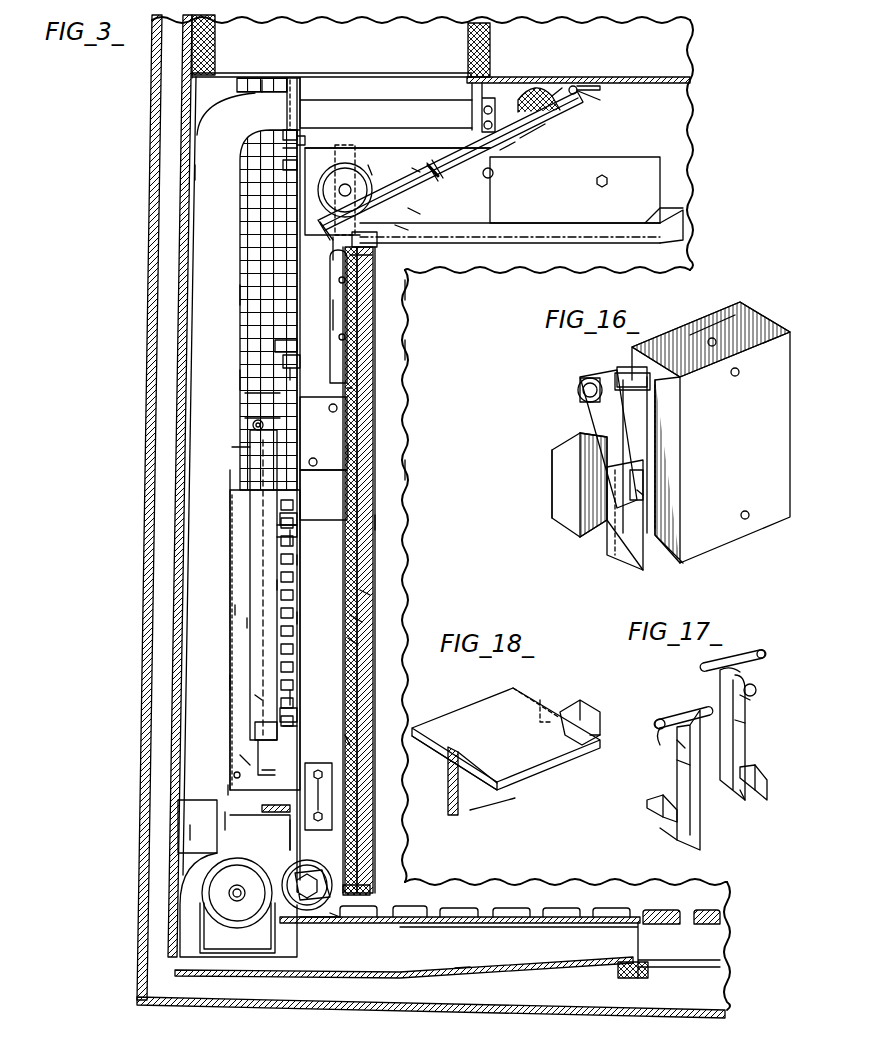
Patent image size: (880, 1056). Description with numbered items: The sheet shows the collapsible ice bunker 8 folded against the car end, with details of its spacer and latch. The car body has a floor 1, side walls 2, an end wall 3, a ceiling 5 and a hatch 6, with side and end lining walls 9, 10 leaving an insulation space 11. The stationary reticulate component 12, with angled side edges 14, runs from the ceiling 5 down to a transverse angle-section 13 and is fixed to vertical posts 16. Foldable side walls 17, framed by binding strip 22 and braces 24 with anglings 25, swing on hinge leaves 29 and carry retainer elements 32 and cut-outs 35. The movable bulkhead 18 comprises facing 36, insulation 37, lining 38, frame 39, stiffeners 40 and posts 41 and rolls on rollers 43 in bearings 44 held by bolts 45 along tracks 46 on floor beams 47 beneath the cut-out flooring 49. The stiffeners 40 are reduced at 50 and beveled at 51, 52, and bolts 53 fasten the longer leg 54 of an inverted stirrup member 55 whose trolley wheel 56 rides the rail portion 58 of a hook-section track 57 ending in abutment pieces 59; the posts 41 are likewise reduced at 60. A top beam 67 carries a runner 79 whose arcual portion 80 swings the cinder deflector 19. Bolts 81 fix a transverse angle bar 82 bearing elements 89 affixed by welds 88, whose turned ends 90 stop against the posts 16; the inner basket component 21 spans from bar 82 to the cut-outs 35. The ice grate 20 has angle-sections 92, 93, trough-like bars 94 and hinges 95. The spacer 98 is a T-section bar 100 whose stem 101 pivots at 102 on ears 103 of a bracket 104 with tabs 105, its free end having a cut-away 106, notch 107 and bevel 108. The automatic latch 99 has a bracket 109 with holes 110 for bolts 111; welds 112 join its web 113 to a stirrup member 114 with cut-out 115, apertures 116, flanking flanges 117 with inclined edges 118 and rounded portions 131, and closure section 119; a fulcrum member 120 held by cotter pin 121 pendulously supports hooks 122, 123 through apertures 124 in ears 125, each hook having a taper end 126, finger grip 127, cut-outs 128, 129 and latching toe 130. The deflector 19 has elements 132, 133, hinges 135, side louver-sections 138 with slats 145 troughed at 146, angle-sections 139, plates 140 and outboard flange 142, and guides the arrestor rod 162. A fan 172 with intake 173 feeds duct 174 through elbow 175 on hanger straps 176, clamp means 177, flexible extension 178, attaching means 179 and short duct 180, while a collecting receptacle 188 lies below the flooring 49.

In FIG. 3, the floor 1 is at (421, 1014).
In FIG. 3, the side walls 2 is at (408, 470).
In FIG. 3, the end wall 3 is at (150, 432).
In FIG. 3, the inner roof or ceiling 5 is at (633, 77).
In FIG. 3, the hatch 6 is at (216, 50).
In FIG. 3, the collapsible bunker 8 is at (222, 565).
In FIG. 3, the side lining wall 9 is at (408, 350).
In FIG. 3, the end lining wall 10 is at (191, 331).
In FIG. 3, the insulation space 11 is at (175, 605).
In FIG. 3, the stationary end wall or reticulate component 12 is at (240, 193).
In FIG. 3, the transverse angle-section 13 is at (228, 791).
In FIG. 3, the inwardly angled side edges 14 is at (245, 296).
In FIG. 3, the vertical posts 16 is at (238, 79).
In FIG. 3, the side walls 17 is at (302, 82).
In FIG. 3, the movable bulkhead 18 is at (376, 520).
In FIG. 3, the cinder deflector 19 is at (487, 179).
In FIG. 3, the ice grate 20 is at (257, 698).
In FIG. 3, the inner basket component 21 is at (300, 618).
In FIG. 3, the binding strip 22 is at (294, 645).
In FIG. 3, the transverse braces 24 is at (301, 138).
In FIG. 3, the anglings 25 is at (284, 162).
In FIG. 3, the hinge leaf 29 is at (291, 152).
In FIG. 3, the retainer element 32 is at (300, 360).
In FIG. 3, the cut-out 35 is at (300, 370).
In FIG. 3, the tongue-and-groove facing 36 is at (366, 593).
In FIG. 3, the insulation 37 is at (356, 620).
In FIG. 3, the tongue-and-groove lining 38 is at (352, 642).
In FIG. 3, the surrounding frame 39 is at (375, 300).
In FIG. 3, the vertical stiffeners 40 is at (372, 284).
In FIG. 3, the posts 41 is at (347, 742).
In FIG. 3, the rollers 43 is at (313, 920).
In FIG. 3, the H-section bearings 44 is at (328, 918).
In FIG. 3, the through bolts 45 is at (317, 795).
In FIG. 3, the tracks 46 is at (431, 925).
In FIG. 3, the floor beams 47 is at (545, 966).
In FIG. 3, the car flooring 49 is at (448, 908).
In FIG. 3, the reduced upper portions 50 is at (338, 312).
In FIG. 3, the bevel 51 is at (366, 262).
In FIG. 3, the bevel 52 is at (352, 390).
In FIG. 3, the bolts 53 is at (339, 282).
In FIG. 3, the longer leg 54 is at (336, 152).
In FIG. 3, the inverted stirrup member 55 is at (347, 146).
In FIG. 3, the trolley wheel 56 is at (372, 166).
In FIG. 3, the track 57 is at (575, 190).
In FIG. 3, the rail portion 58 is at (556, 226).
In FIG. 3, the abutment pieces 59 is at (668, 213).
In FIG. 3, the reduced upper ends 60 is at (372, 333).
In FIG. 3, the beam 67 is at (427, 292).
In FIG. 3, the runner 79 is at (331, 266).
In FIG. 3, the arcual portion 80 is at (378, 242).
In FIG. 3, the bolts 81 is at (318, 786).
In FIG. 3, the transverse angle bar 82 is at (308, 862).
In FIG. 3, the welds 88 is at (272, 805).
In FIG. 3, the projecting elements 89 is at (260, 832).
In FIG. 3, the downwardly turned free ends 90 is at (225, 815).
In FIG. 3, the outer angle-section 92 is at (255, 757).
In FIG. 3, the inner angle-section 93 is at (263, 585).
In FIG. 3, the trough-like bars 94 is at (212, 640).
In FIG. 3, the hinges 95 is at (245, 760).
In FIG. 3, the spacer 98 is at (235, 610).
In FIG. 18, the spacer 98 is at (500, 808).
In FIG. 3, the automatic latch 99 is at (310, 415).
In FIG. 16, the automatic latch 99 is at (522, 455).
In FIG. 3, the T-section bar 100 is at (247, 623).
In FIG. 18, the T-section bar 100 is at (460, 710).
In FIG. 3, the stem 101 is at (231, 470).
In FIG. 18, the stem 101 is at (448, 780).
In FIG. 3, the pivot 102 is at (253, 426).
In FIG. 3, the apertured ears 103 is at (245, 395).
In FIG. 3, the channel-section bracket 104 is at (245, 418).
In FIG. 3, the flanking tabs 105 is at (245, 447).
In FIG. 18, the cut-away flange portion 106 is at (548, 700).
In FIG. 3, the notch 107 is at (255, 728).
In FIG. 18, the notch 107 is at (600, 725).
In FIG. 18, the bevel 108 is at (588, 697).
In FIG. 3, the channel-section bracket 109 is at (352, 453).
In FIG. 16, the channel-section bracket 109 is at (788, 318).
In FIG. 16, the holes 110 is at (735, 377).
In FIG. 3, the bolts 111 is at (317, 462).
In FIG. 16, the line welds 112 is at (656, 450).
In FIG. 16, the web portion 113 is at (620, 372).
In FIG. 16, the stirrup member 114 is at (648, 428).
In FIG. 16, the transverse cut-out 115 is at (617, 375).
In FIG. 16, the rectangular apertures 116 is at (645, 478).
In FIG. 16, the flanking flanges 117 is at (556, 505).
In FIG. 16, the inclined upper edges 118 is at (570, 448).
In FIG. 16, the closure section 119 is at (580, 412).
In FIG. 16, the fulcrum member 120 is at (578, 390).
In FIG. 16, the cotter pin 121 is at (700, 375).
In FIG. 17, the right-hand latch hook 122 is at (700, 822).
In FIG. 17, the left-hand latch hook 123 is at (745, 740).
In FIG. 17, the apertures 124 is at (675, 745).
In FIG. 17, the ears 125 is at (657, 735).
In FIG. 17, the upper taper end 126 is at (695, 706).
In FIG. 17, the cross arm or finger grip 127 is at (660, 718).
In FIG. 17, the upper rectangular cut-out 128 is at (677, 765).
In FIG. 17, the lower cut-out 129 is at (647, 803).
In FIG. 17, the latching toe 130 is at (650, 808).
In FIG. 16, the rounded portions 131 is at (605, 545).
In FIG. 3, the upper angle-section element 132 is at (586, 104).
In FIG. 3, the lower angle-section element 133 is at (333, 228).
In FIG. 3, the hinges 135 is at (592, 90).
In FIG. 3, the side louver-sections 138 is at (503, 155).
In FIG. 3, the intermediate transverse angle-sections 139 is at (414, 168).
In FIG. 3, the plates 140 is at (420, 212).
In FIG. 3, the outboard flange 142 is at (333, 242).
In FIG. 3, the inclined slats 145 is at (535, 150).
In FIG. 3, the smaller troughings 146 is at (440, 170).
In FIG. 3, the arrestor rod 162 is at (406, 228).
In FIG. 3, the rotary fan 172 is at (224, 890).
In FIG. 3, the intake 173 is at (232, 958).
In FIG. 3, the outflow air duct 174 is at (196, 172).
In FIG. 3, the reducer elbow 175 is at (370, 100).
In FIG. 3, the hanger straps 176 is at (296, 78).
In FIG. 3, the clamp means 177 is at (496, 98).
In FIG. 3, the flexible extension 178 is at (533, 92).
In FIG. 3, the attaching means 179 is at (562, 88).
In FIG. 3, the short duct 180 is at (545, 127).
In FIG. 3, the collecting receptacle 188 is at (462, 973).